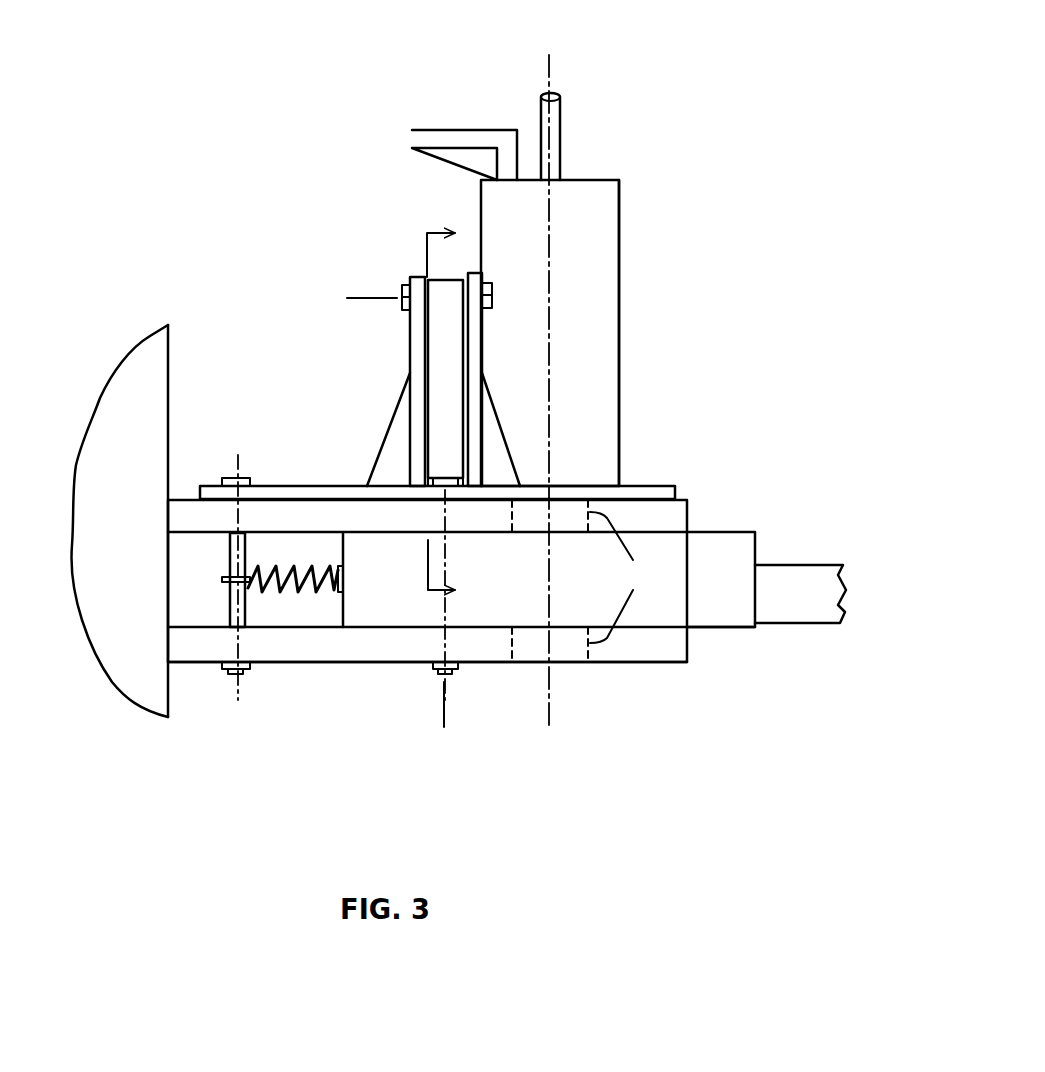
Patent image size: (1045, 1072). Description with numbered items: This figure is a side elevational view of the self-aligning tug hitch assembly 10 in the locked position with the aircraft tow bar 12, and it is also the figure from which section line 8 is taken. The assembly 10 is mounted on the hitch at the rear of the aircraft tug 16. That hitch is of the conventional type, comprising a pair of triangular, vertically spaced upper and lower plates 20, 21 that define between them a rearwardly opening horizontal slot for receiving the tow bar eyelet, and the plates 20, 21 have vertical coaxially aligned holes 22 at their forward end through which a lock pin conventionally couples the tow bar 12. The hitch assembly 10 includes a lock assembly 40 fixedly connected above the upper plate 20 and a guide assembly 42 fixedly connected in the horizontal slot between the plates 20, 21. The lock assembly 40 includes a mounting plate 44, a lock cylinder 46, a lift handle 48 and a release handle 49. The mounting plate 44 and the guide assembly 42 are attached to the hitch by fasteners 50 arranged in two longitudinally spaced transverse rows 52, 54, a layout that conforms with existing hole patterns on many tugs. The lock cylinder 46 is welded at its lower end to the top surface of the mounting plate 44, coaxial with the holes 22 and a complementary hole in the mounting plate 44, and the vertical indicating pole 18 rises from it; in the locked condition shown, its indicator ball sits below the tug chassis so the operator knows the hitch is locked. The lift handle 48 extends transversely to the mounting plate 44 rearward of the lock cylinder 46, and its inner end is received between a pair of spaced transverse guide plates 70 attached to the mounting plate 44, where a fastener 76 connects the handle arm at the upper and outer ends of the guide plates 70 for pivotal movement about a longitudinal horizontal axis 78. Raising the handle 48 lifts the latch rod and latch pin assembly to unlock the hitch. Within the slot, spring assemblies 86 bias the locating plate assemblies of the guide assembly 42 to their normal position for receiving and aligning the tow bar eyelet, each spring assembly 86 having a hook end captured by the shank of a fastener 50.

The section line 8- 8 is at (449, 405).
The tug hitch assembly 10 is at (202, 205).
The aircraft tow bar 12 is at (817, 582).
The tug 16 is at (142, 372).
The indicating pole 18 is at (558, 112).
The upper plate 20 is at (692, 520).
The lower plate 21 is at (668, 663).
The holes 22 is at (617, 577).
The lock assembly 40 is at (622, 391).
The guide assembly 42 is at (743, 628).
The mounting plate 44 is at (478, 461).
The lock cylinder 46 is at (620, 235).
The lift handle 48 is at (448, 393).
The release handle 49 is at (428, 103).
The fasteners 50 is at (437, 675).
The transverse row 52 is at (233, 690).
The transverse row 54 is at (482, 721).
The guide plates 70 is at (475, 352).
The fastener 76 is at (400, 287).
The longitudinal horizontal axis 78 is at (590, 314).
The spring assemblies 86 is at (217, 580).